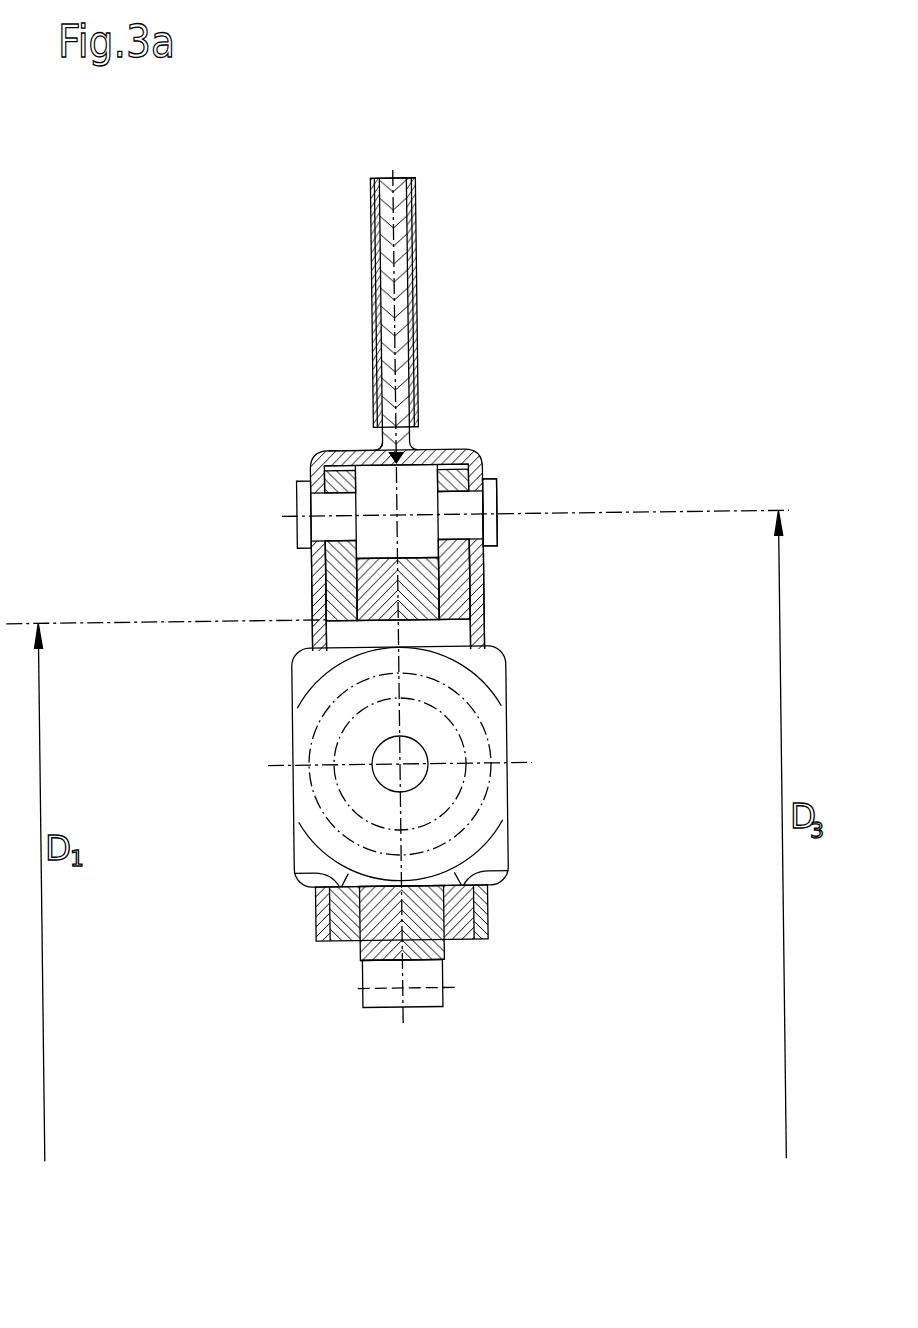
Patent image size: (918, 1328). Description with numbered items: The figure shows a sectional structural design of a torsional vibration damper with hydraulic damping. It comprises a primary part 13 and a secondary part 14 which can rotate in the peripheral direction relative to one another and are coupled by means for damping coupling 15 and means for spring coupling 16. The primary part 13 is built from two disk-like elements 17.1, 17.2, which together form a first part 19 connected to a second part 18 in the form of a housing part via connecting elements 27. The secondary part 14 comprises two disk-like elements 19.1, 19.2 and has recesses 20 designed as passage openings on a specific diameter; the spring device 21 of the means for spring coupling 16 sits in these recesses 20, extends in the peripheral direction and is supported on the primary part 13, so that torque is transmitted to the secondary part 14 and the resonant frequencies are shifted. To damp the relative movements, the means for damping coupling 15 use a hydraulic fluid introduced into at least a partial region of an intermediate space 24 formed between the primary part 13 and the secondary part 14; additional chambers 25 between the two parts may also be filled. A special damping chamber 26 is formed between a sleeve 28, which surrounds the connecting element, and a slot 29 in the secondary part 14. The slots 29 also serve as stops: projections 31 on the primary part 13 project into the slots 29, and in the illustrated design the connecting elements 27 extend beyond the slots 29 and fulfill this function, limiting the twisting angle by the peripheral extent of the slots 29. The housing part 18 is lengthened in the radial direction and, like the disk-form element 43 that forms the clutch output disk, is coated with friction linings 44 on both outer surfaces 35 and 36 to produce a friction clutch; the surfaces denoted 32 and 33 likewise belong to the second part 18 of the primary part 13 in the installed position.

The primary part 13 is at (481, 442).
The secondary part 14 is at (448, 961).
The means for damping coupling 15 is at (372, 500).
The means for spring coupling 16 is at (506, 783).
The disk-like element 17.1 is at (342, 583).
The disk-like element 17.2 is at (458, 582).
The second part (housing part) 18 is at (486, 607).
The first part of the primary part 19 is at (323, 620).
The disk-like element 19.1 is at (380, 954).
The disk-like element 19.2 is at (428, 952).
The recesses 20 is at (422, 626).
The spring device 21 is at (503, 668).
The intermediate space 24 is at (298, 705).
The chambers 25 is at (415, 485).
The damping chamber 26 is at (377, 478).
The connecting elements 27 is at (497, 507).
The sleeve 28 is at (368, 530).
The slot 29 is at (487, 480).
The projections 31 is at (497, 500).
The outer surface of the housing part 32 is at (293, 872).
The outer surface of the housing part 33 is at (507, 872).
The outer surface 35 is at (368, 199).
The outer surface 36 is at (421, 281).
The disk-form element 43 is at (417, 250).
The friction lining 44 is at (417, 211).